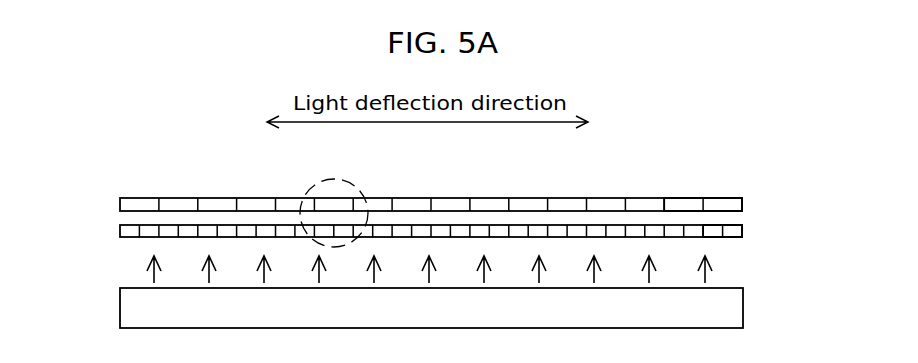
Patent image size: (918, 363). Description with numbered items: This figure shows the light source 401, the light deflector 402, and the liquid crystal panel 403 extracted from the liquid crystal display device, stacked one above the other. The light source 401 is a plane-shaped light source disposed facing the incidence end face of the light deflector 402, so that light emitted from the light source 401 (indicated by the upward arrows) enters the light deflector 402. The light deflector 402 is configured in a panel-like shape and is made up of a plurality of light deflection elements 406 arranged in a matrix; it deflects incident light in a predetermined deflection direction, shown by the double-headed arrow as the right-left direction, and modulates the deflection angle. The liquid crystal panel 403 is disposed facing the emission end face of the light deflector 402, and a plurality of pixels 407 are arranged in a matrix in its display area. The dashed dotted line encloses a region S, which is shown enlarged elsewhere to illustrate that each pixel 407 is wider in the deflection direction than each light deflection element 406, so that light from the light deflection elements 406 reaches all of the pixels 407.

The light source 401 is at (133, 312).
The light deflector 402 is at (120, 230).
The liquid crystal panel 403 is at (120, 205).
The light deflection element 406 is at (713, 237).
The pixel 407 is at (720, 202).
The region S is at (351, 184).